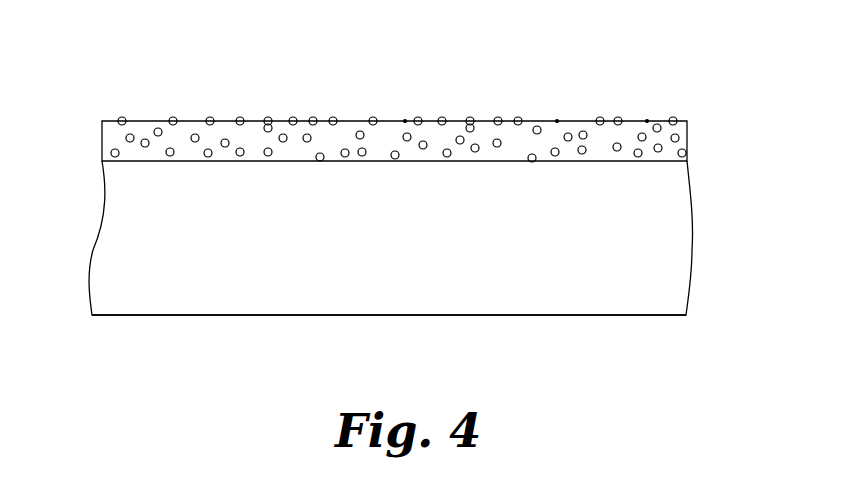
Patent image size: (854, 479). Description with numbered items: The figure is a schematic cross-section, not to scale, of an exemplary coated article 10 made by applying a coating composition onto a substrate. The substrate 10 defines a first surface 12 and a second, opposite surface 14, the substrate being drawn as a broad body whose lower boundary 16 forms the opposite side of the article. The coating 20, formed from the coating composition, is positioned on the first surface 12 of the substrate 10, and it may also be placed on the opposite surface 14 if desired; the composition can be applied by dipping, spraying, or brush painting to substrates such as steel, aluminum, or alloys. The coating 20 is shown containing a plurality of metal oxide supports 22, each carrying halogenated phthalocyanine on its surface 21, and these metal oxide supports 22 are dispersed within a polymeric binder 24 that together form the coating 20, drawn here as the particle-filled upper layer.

The coated article 10 is at (685, 79).
The first surface 12 is at (404, 240).
The second surface 14 is at (429, 158).
The bottom surface of substrate 16 is at (190, 316).
The coating 20 is at (112, 140).
The surface of metal oxide support 21 is at (206, 118).
The metal oxide supports 22 is at (337, 119).
The polymeric binder 24 is at (253, 137).